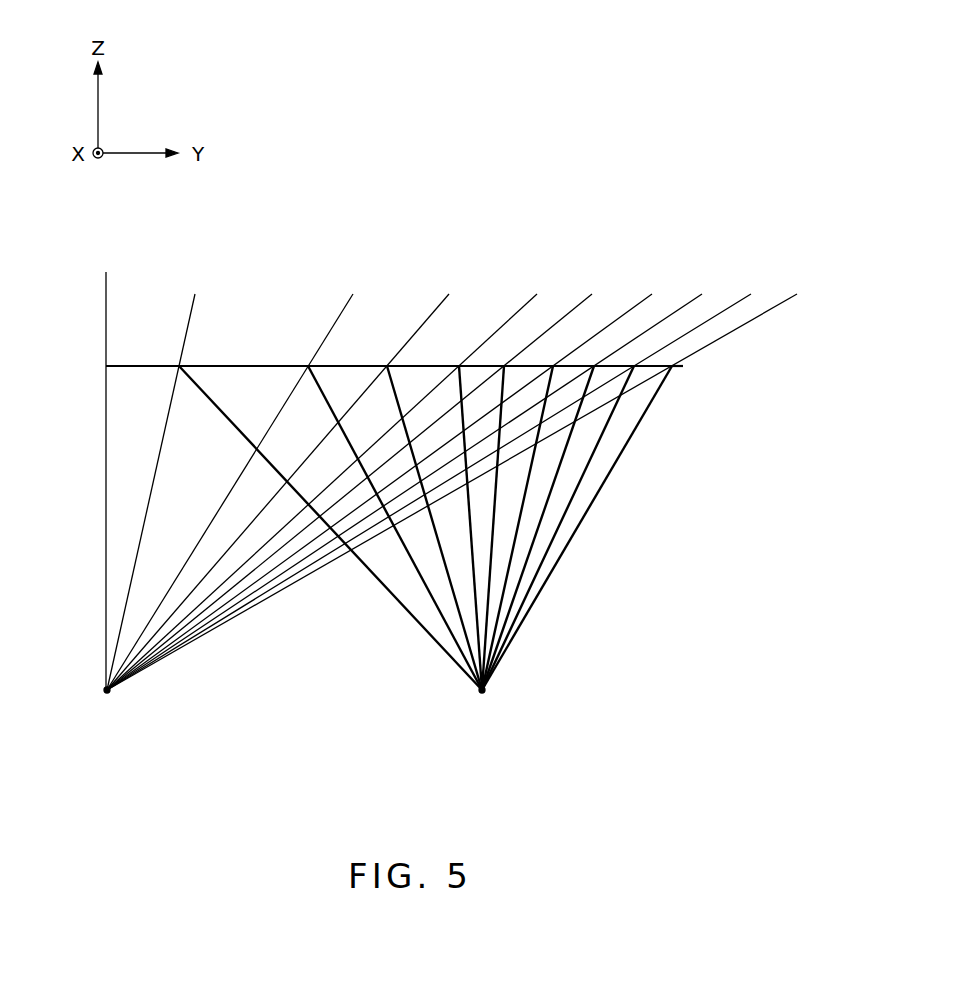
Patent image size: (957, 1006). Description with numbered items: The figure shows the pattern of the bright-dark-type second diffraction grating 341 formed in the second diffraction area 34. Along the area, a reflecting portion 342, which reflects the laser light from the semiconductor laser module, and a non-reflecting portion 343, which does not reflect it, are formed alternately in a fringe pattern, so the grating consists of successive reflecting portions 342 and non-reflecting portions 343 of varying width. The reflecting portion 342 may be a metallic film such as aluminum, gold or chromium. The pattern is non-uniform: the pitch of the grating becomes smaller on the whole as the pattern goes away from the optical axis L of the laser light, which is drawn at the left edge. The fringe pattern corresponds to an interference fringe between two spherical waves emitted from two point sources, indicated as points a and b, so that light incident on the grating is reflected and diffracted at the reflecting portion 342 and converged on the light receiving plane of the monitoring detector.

The second diffraction area 34 is at (108, 225).
The second diffraction grating 341 is at (750, 290).
The reflecting portion 342 is at (215, 365).
The non-reflecting portion 343 is at (336, 357).
The optical axis L is at (105, 400).
The point a is at (112, 707).
The point b is at (482, 710).